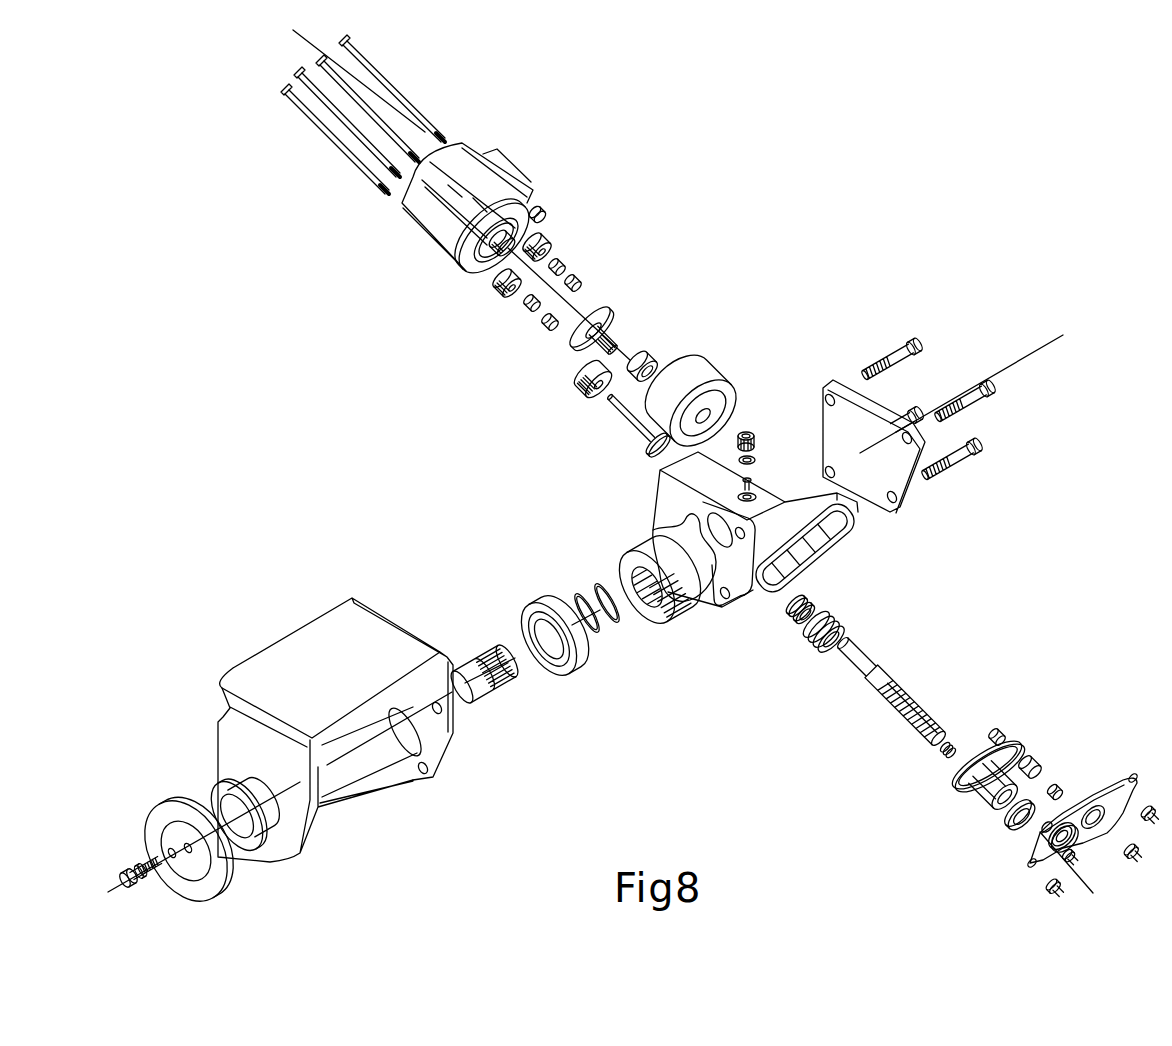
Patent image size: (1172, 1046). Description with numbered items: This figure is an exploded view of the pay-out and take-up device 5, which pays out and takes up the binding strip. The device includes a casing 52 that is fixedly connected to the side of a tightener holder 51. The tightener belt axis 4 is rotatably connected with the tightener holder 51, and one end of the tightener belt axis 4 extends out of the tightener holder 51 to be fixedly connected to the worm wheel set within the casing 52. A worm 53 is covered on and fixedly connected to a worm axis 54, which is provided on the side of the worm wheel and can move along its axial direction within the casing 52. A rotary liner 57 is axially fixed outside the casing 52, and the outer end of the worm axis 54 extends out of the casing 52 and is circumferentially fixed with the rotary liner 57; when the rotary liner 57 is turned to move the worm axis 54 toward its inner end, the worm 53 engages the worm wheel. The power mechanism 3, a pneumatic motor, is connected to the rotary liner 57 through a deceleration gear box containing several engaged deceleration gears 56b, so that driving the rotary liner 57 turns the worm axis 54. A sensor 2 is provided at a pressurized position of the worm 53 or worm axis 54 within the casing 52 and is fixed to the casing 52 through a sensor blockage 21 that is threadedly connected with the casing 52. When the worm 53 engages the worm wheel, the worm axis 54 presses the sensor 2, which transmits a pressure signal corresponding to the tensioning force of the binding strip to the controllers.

The sensor 2 is at (633, 427).
The power mechanism 3 is at (552, 178).
The tightener belt axis 4 is at (342, 767).
The pay-out and take-up device 5 is at (757, 398).
The sensor blockage 21 is at (578, 370).
The tightener holder 51 is at (300, 678).
The casing 52 is at (717, 600).
The worm 53 is at (843, 623).
The worm axis 54 is at (893, 682).
The deceleration gears 56b is at (987, 755).
The rotary liner 57 is at (1017, 750).